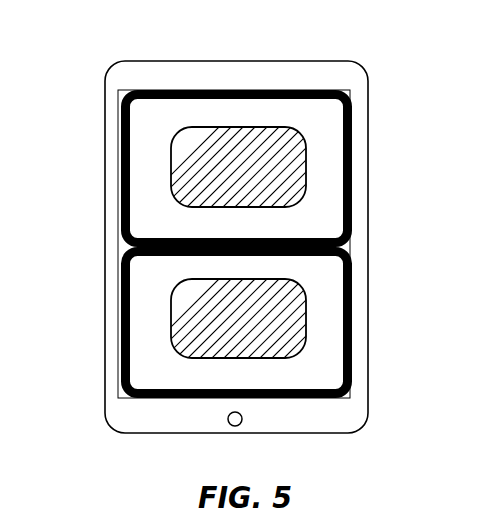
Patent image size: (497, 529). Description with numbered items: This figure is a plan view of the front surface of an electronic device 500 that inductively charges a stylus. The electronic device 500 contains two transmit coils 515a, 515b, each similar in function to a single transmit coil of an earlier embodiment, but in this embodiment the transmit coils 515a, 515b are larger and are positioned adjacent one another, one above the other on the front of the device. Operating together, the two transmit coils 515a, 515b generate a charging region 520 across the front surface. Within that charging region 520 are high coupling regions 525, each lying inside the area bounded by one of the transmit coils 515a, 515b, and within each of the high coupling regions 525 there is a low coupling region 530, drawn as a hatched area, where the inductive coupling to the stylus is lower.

The electronic device 500 is at (243, 223).
The charging region 520 is at (347, 73).
The transmit coil 515a is at (352, 125).
The transmit coil 515b is at (352, 258).
The high coupling region 525 is at (148, 122).
The low coupling region 530 is at (272, 165).